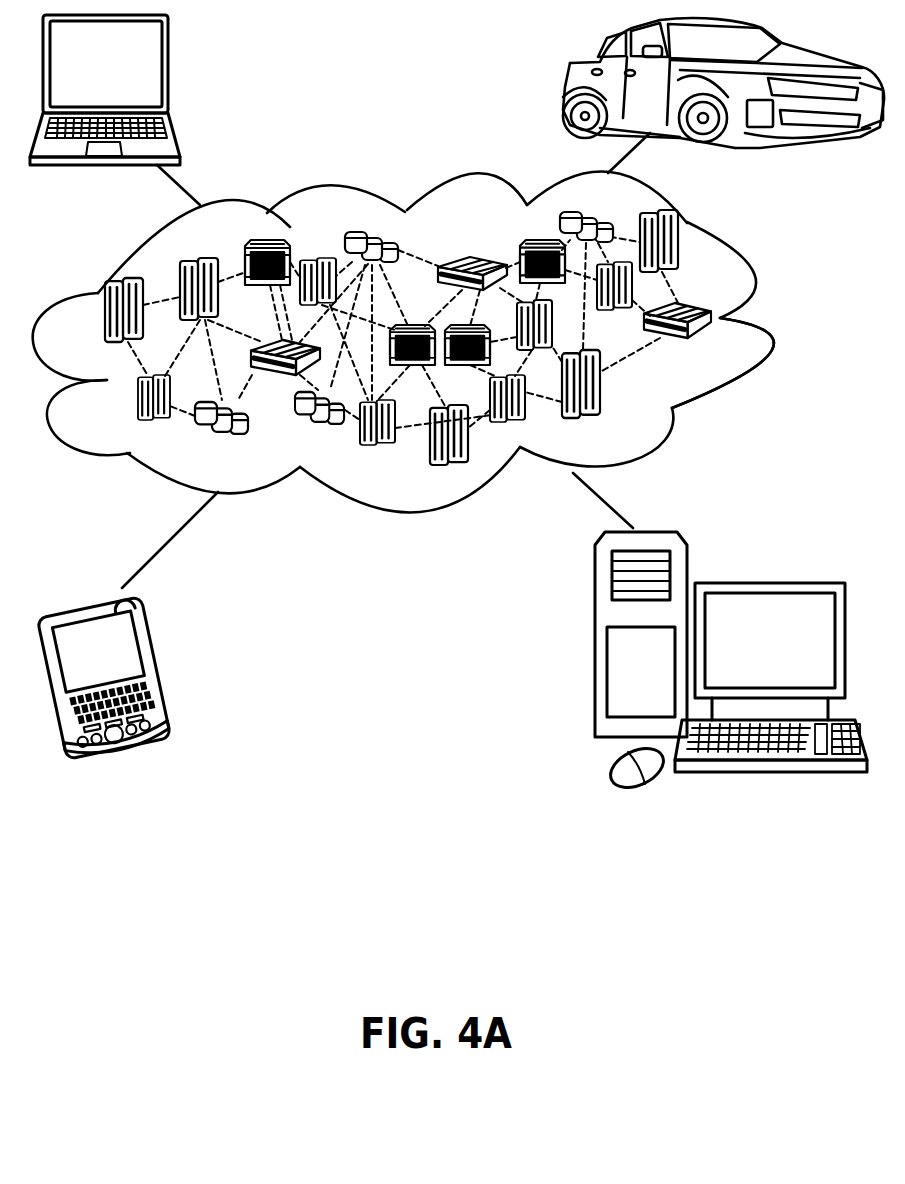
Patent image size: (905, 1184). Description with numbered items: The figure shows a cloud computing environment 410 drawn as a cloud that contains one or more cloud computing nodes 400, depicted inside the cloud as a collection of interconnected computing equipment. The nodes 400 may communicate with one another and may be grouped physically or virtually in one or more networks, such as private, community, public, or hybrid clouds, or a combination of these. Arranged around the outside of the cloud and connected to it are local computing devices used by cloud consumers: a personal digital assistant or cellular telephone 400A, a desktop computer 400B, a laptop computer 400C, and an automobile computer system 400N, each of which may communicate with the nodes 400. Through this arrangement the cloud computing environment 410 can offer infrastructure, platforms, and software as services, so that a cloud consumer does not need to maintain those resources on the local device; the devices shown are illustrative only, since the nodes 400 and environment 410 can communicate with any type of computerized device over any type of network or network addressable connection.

The cloud computing nodes 400 is at (722, 349).
The cloud computing environment 410 is at (770, 318).
The personal digital assistant (PDA) or cellular telephone 400A is at (167, 663).
The desktop computer 400B is at (766, 583).
The laptop computer 400C is at (171, 70).
The automobile computer system 400N is at (566, 82).